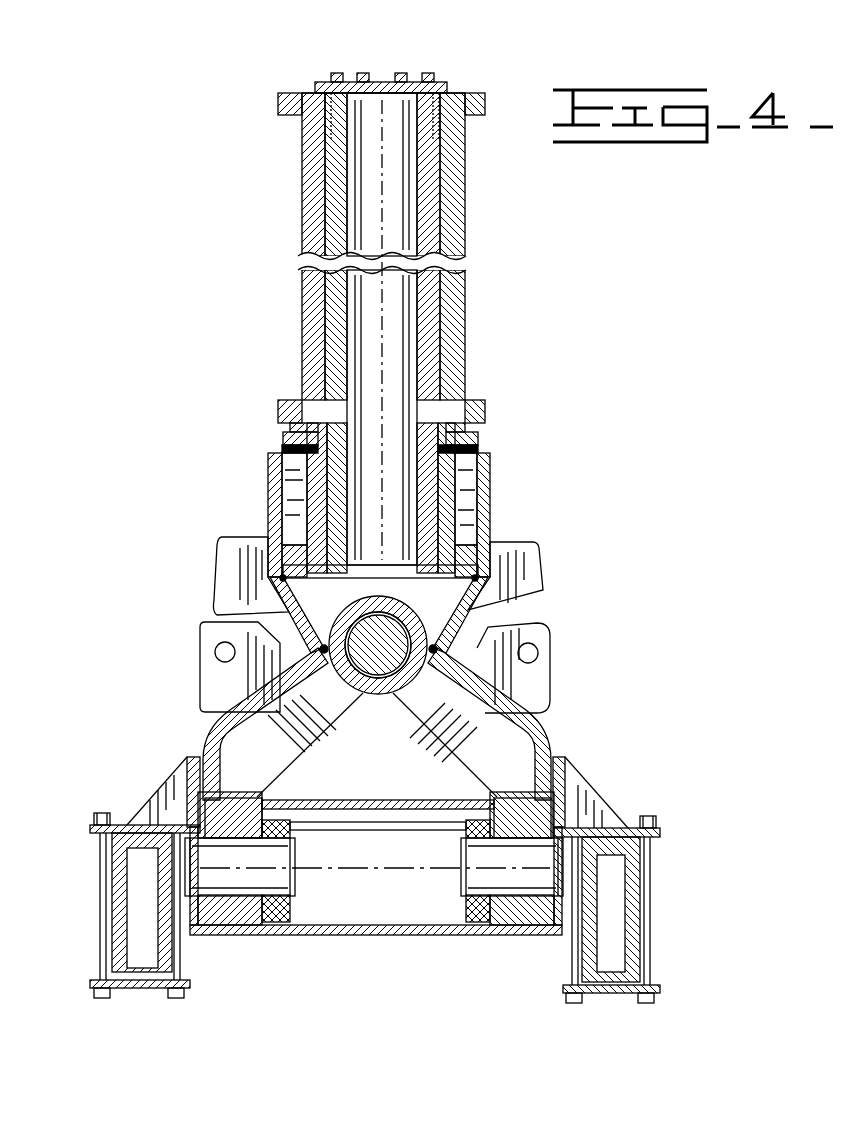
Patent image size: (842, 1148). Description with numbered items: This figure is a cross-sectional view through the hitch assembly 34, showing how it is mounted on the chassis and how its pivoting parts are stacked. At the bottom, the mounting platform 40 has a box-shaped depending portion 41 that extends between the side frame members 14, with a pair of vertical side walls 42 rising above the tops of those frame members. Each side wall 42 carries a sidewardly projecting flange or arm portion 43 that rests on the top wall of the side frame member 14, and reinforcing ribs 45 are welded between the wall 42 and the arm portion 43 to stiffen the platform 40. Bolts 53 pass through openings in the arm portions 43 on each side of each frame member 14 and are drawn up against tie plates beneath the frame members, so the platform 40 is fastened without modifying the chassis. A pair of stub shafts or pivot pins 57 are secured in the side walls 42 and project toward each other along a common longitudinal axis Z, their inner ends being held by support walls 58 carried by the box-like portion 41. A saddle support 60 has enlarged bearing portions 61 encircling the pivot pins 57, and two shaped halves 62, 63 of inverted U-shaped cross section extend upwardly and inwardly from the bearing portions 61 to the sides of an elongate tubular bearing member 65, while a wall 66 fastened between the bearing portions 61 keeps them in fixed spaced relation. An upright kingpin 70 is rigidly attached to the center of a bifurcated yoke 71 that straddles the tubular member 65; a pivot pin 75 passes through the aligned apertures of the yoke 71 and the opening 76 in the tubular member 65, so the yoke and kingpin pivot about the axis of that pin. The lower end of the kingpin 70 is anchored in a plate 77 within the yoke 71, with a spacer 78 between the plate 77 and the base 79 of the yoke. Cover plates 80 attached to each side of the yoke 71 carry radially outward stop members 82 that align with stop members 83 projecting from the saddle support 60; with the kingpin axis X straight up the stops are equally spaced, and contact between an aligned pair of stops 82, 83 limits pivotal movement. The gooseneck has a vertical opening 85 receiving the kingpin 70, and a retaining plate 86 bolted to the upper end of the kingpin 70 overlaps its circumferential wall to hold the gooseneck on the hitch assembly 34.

The side frame member 14 is at (165, 978).
The hitch assembly 34 is at (548, 560).
The mounting platform 40 is at (372, 940).
The box-shaped depending portion 41 is at (466, 940).
The vertical side wall 42 is at (190, 775).
The flange or arm portion 43 is at (148, 812).
The reinforcing rib 45 is at (590, 808).
The bolt 53 is at (100, 892).
The stub shaft or pivot pin 57 is at (258, 880).
The support wall 58 is at (291, 906).
The saddle support 60 is at (420, 743).
The enlarged bearing portion 61 is at (245, 797).
The shaped half 62 is at (320, 740).
The shaped half 63 is at (437, 745).
The elongate tubular bearing member 65 is at (410, 612).
The wall 66 is at (372, 804).
The kingpin 70 is at (430, 385).
The bifurcated yoke 71 is at (266, 520).
The pivot pin 75 is at (363, 670).
The opening 76 is at (352, 618).
The plate 77 is at (470, 568).
The spacer 78 is at (458, 462).
The base 79 is at (287, 440).
The cover plate 80 is at (268, 492).
The stop member 82 is at (230, 553).
The stop member 83 is at (210, 668).
The vertical opening 85 is at (436, 306).
The retaining plate 86 is at (447, 92).
The longitudinal axis of kingpin X is at (380, 236).
The longitudinal axis of pivot pins Z is at (368, 848).